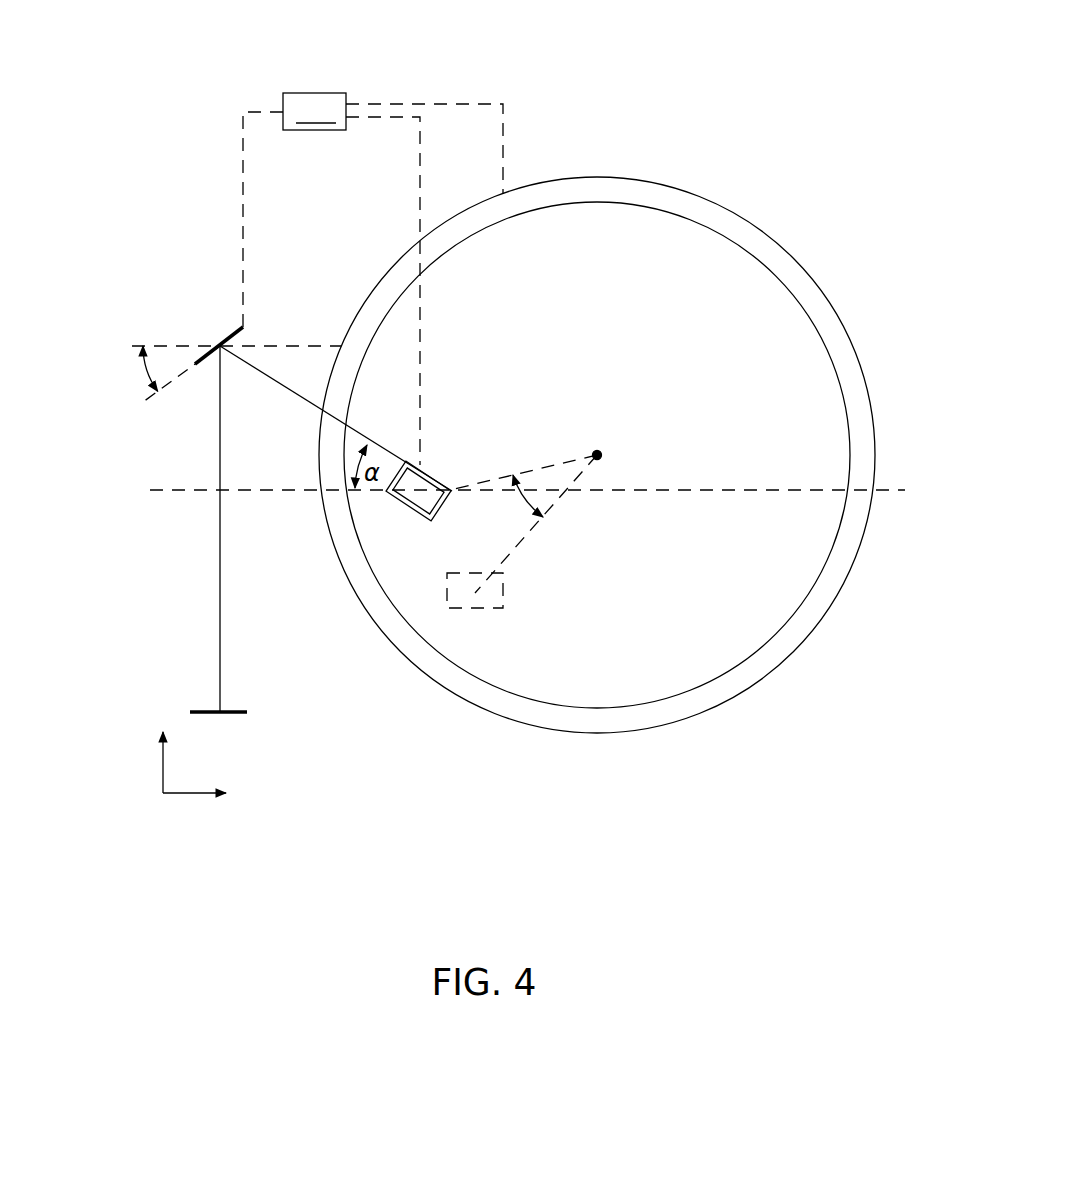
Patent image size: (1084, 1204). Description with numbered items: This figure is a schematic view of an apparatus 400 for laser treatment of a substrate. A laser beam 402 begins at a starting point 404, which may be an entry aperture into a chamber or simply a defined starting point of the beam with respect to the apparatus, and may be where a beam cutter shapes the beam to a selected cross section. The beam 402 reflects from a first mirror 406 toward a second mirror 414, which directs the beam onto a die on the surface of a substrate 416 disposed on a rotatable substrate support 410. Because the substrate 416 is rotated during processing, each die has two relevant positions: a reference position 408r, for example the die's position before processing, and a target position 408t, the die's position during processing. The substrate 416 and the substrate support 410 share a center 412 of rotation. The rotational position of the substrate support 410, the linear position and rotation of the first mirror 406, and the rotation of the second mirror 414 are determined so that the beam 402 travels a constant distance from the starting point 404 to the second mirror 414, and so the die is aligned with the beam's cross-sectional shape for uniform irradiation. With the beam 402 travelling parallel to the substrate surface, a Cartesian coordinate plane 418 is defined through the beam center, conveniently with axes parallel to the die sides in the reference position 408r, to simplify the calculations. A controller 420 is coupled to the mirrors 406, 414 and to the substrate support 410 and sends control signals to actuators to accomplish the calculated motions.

The apparatus 400 is at (681, 56).
The laser beam 402 is at (218, 538).
The starting point 404 is at (235, 714).
The first mirror 406 is at (228, 330).
The target position 408t is at (428, 468).
The reference position 408r is at (504, 580).
The rotatable substrate support 410 is at (578, 177).
The center 412 is at (600, 455).
The second mirror 414 is at (413, 458).
The substrate 416 is at (770, 267).
The Cartesian coordinate plane 418 is at (161, 767).
The controller 420 is at (373, 279).